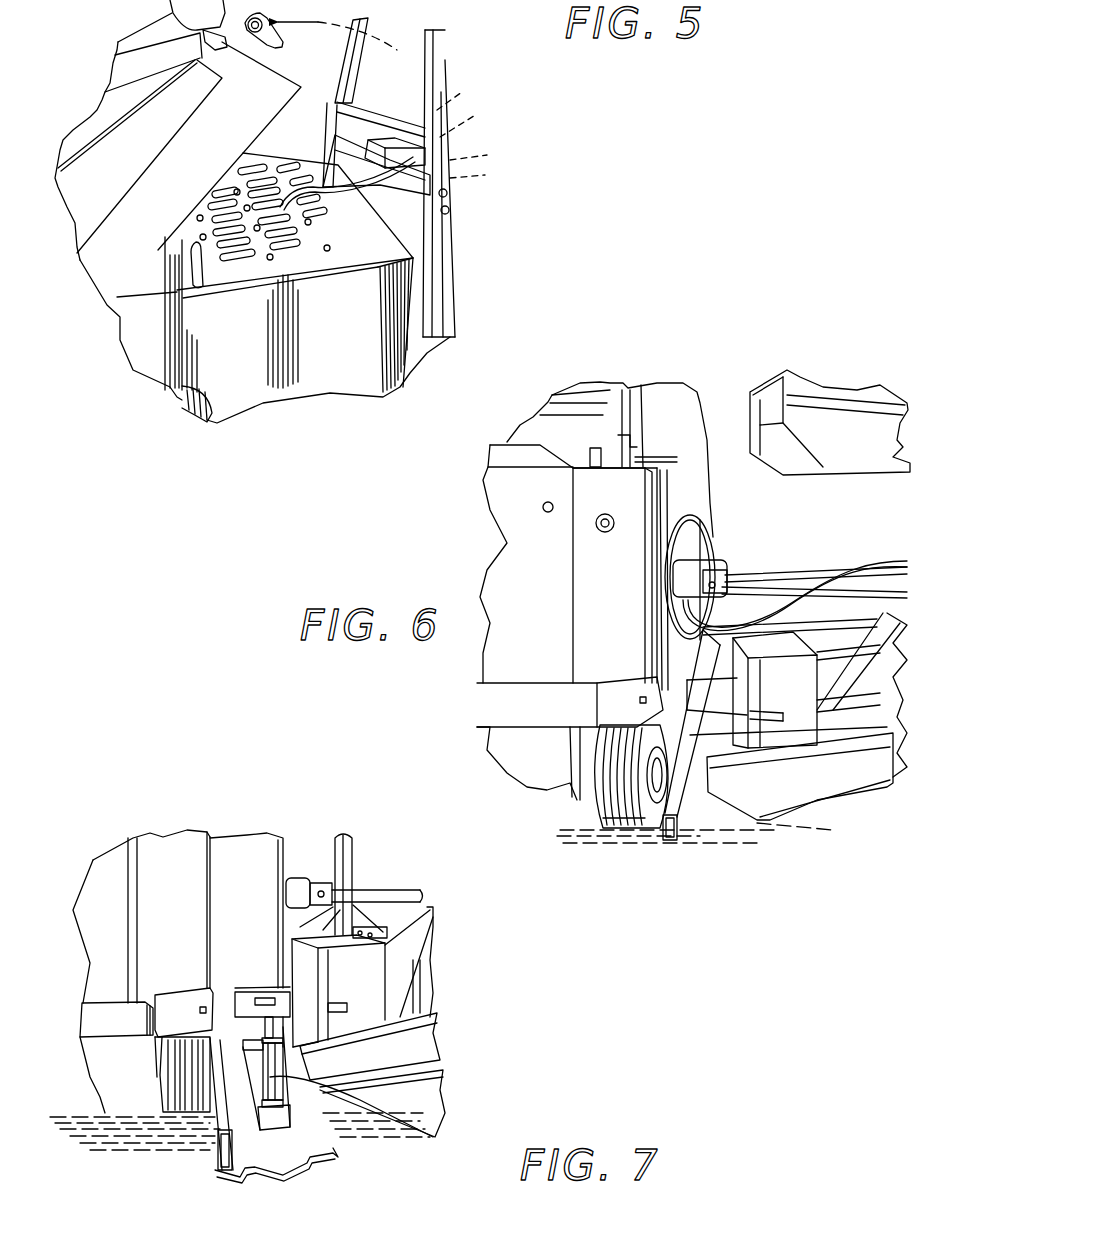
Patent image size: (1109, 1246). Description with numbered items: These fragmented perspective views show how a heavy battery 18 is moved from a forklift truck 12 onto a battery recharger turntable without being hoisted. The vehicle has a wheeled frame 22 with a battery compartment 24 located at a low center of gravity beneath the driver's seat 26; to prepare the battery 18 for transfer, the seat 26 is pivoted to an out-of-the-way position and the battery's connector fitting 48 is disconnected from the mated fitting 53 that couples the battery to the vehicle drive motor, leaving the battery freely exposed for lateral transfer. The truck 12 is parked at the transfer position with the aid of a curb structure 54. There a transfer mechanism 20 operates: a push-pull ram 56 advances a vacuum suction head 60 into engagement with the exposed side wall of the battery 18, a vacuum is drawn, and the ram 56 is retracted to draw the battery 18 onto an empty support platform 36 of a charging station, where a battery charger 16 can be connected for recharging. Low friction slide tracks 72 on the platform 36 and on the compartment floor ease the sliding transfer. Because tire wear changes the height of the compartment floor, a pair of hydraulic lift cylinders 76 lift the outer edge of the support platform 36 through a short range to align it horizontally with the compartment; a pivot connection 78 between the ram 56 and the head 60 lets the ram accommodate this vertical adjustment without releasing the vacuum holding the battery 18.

In FIG. 5, the forklift truck 12 is at (130, 377).
In FIG. 6, the forklift truck 12 is at (513, 613).
In FIG. 7, the forklift truck 12 is at (120, 890).
In FIG. 6, the battery charger 16 is at (847, 397).
In FIG. 5, the battery 18 is at (317, 370).
In FIG. 6, the battery 18 is at (703, 543).
In FIG. 7, the battery 18 is at (278, 850).
In FIG. 6, the transfer mechanism 20 is at (873, 560).
In FIG. 5, the wheeled frame 22 is at (447, 273).
In FIG. 5, the battery compartment 24 is at (212, 423).
In FIG. 5, the seat 26 is at (90, 127).
In FIG. 6, the support platform 36 is at (887, 677).
In FIG. 7, the support platform 36 is at (258, 1000).
In FIG. 5, the connector fitting 48 is at (433, 143).
In FIG. 5, the mated fitting 53 is at (388, 143).
In FIG. 6, the curb structure 54 is at (653, 840).
In FIG. 7, the curb structure 54 is at (233, 1145).
In FIG. 6, the push-pull ram 56 is at (827, 577).
In FIG. 7, the push-pull ram 56 is at (452, 873).
In FIG. 6, the vacuum suction head 60 is at (703, 543).
In FIG. 7, the vacuum suction head 60 is at (290, 880).
In FIG. 7, the slide tracks 72 is at (440, 1037).
In FIG. 7, the hydraulic lift cylinders 76 is at (270, 1073).
In FIG. 6, the pivot connection 78 is at (827, 552).